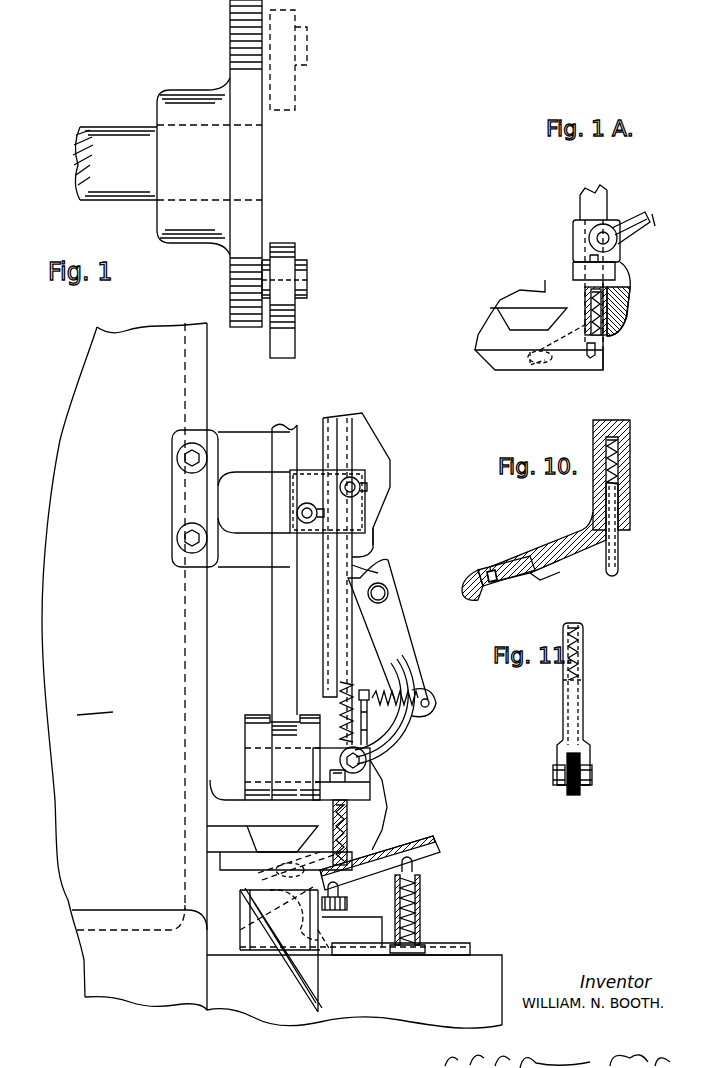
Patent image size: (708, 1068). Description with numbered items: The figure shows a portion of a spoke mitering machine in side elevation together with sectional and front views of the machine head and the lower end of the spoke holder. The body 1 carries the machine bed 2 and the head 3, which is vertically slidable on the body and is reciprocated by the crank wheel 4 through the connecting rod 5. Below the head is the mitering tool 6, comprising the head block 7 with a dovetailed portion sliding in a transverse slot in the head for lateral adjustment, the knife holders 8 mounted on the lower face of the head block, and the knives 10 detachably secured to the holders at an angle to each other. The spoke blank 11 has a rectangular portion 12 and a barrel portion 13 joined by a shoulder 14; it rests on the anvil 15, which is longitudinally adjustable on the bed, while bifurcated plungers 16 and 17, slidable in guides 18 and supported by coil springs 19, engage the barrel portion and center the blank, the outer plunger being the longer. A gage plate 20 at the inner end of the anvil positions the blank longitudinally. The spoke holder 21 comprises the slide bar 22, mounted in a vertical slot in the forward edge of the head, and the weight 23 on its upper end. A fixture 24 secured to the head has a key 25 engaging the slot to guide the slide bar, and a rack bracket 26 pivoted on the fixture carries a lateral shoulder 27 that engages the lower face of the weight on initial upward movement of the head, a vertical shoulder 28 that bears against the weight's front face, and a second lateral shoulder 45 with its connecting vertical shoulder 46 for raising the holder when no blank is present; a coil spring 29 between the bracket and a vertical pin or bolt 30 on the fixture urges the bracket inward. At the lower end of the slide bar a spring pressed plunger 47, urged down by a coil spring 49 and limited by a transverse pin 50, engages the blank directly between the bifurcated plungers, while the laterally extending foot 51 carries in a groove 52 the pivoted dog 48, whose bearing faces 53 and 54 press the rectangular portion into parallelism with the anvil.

In FIG. 1, the body 1 is at (55, 607).
In FIG. 1, the machine bed 2 is at (428, 1013).
In FIG. 1, the head 3 is at (236, 810).
In FIG. 1, the crank wheel 4 is at (255, 223).
In FIG. 1, the connecting rod 5 is at (293, 352).
In FIG. 1, the mitering tool 6 is at (205, 905).
In FIG. 1, the head block 7 is at (232, 862).
In FIG. 1A, the head block 7 is at (500, 360).
In FIG. 1, the knife holders 8 is at (262, 838).
In FIG. 1A, the knife holders 8 is at (510, 323).
In FIG. 1, the knives 10 is at (300, 965).
In FIG. 1, the spoke blank 11 is at (420, 845).
In FIG. 1, the rectangular portion 12 is at (256, 950).
In FIG. 1, the barrel portion 13 is at (372, 860).
In FIG. 1, the shoulder 14 is at (290, 925).
In FIG. 1, the anvil 15 is at (322, 955).
In FIG. 1, the inner bifurcated plunger 16 is at (340, 893).
In FIG. 1, the outer bifurcated plunger 17 is at (414, 868).
In FIG. 1, the guides 18 is at (420, 902).
In FIG. 1, the coil springs 19 is at (348, 905).
In FIG. 1, the gage plate 20 is at (250, 930).
In FIG. 1, the spoke holder 21 is at (352, 666).
In FIG. 10, the spoke holder 21 is at (565, 569).
In FIG. 11, the spoke holder 21 is at (561, 798).
In FIG. 1, the slide bar 22 is at (345, 822).
In FIG. 1A, the slide bar 22 is at (607, 205).
In FIG. 10, the slide bar 22 is at (630, 428).
In FIG. 11, the slide bar 22 is at (584, 645).
In FIG. 1, the weight 23 is at (362, 538).
In FIG. 1, the fixture 24 is at (378, 783).
In FIG. 1A, the fixture 24 is at (630, 272).
In FIG. 1A, the key 25 is at (610, 335).
In FIG. 1, the rack bracket 26 is at (398, 642).
In FIG. 1A, the rack bracket 26 is at (630, 215).
In FIG. 1, the lateral shoulder 27 is at (376, 556).
In FIG. 1, the vertical shoulder 28 is at (368, 520).
In FIG. 1, the coil spring 29 is at (385, 695).
In FIG. 1, the vertical pin or bolt 30 is at (368, 722).
In FIG. 1, the second lateral shoulder 45 is at (388, 592).
In FIG. 1, the vertical shoulder 46 is at (372, 566).
In FIG. 10, the spring pressed plunger 47 is at (618, 549).
In FIG. 10, the pivoted dog 48 is at (492, 584).
In FIG. 11, the pivoted dog 48 is at (574, 796).
In FIG. 10, the coil spring 49 is at (612, 470).
In FIG. 10, the transverse pin 50 is at (618, 491).
In FIG. 10, the foot 51 is at (538, 548).
In FIG. 11, the foot 51 is at (591, 756).
In FIG. 10, the groove 52 is at (535, 575).
In FIG. 10, the bearing face 53 is at (468, 600).
In FIG. 10, the bearing face 54 is at (520, 588).